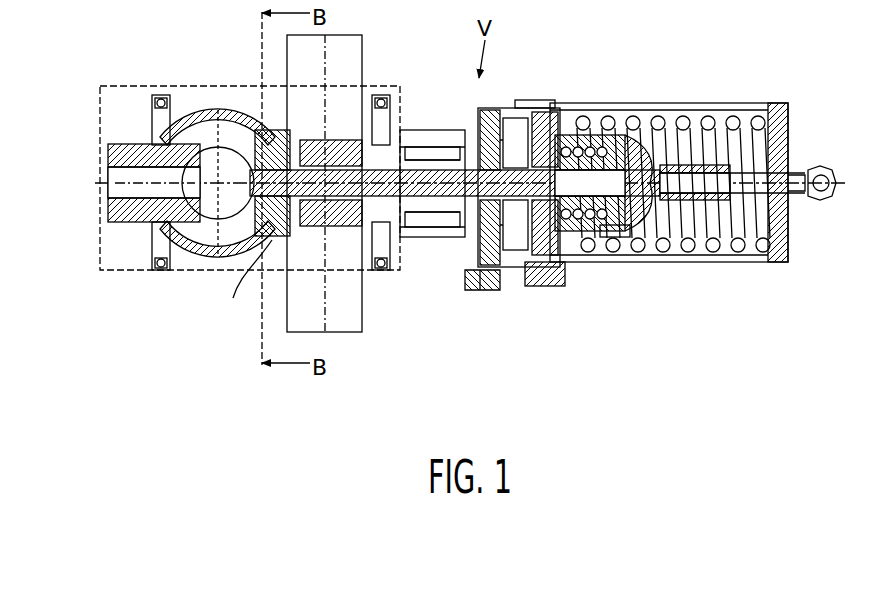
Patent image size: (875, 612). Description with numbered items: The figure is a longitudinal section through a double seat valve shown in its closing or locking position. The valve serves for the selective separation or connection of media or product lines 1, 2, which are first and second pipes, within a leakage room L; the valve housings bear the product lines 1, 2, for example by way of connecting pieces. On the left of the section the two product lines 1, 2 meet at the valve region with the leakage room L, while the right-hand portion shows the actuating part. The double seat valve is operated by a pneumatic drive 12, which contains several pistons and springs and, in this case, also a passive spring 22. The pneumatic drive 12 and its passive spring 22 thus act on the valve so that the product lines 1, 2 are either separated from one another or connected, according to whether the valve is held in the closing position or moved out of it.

The product line 1 is at (231, 237).
The product line 2 is at (355, 50).
The pneumatic drive 12 is at (612, 97).
The passive spring 22 is at (622, 240).
The leakage room L is at (248, 286).